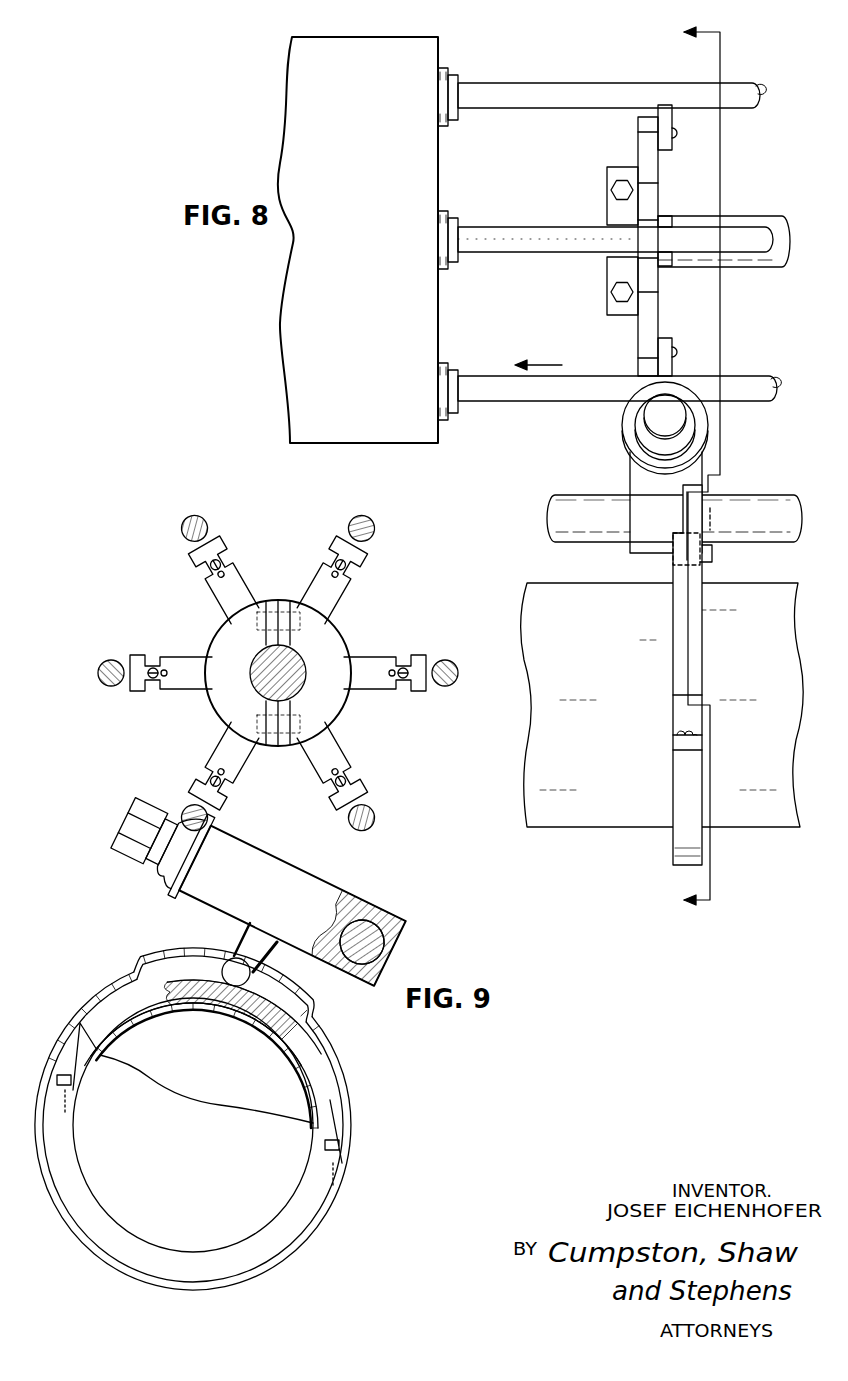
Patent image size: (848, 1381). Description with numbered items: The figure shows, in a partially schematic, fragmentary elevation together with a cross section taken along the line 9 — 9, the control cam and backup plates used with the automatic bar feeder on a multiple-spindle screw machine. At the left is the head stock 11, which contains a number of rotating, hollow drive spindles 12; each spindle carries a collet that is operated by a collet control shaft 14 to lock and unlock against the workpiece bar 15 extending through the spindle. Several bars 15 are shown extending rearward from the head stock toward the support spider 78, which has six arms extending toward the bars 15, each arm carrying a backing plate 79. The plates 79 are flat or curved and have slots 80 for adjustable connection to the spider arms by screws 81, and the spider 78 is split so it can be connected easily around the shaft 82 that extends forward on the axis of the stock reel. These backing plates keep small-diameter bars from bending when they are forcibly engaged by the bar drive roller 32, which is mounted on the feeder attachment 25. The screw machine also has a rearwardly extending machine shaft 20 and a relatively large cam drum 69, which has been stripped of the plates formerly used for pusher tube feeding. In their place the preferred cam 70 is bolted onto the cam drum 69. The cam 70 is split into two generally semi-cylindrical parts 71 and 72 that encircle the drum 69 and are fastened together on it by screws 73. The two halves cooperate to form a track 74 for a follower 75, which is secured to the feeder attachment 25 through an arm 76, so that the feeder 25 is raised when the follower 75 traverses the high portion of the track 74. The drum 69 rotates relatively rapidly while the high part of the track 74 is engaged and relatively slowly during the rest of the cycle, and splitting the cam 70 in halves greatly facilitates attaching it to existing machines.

In FIG. 8, the section line 9 — 9 is at (685, 467).
In FIG. 8, the head stock 11 is at (435, 65).
In FIG. 8, the drive spindle 12 is at (449, 220).
In FIG. 8, the collet control shaft 14 is at (465, 234).
In FIG. 8, the workpiece bar 15 is at (752, 90).
In FIG. 9, the workpiece bar 15 is at (200, 518).
In FIG. 8, the machine shaft 20 is at (774, 498).
In FIG. 9, the machine shaft 20 is at (380, 925).
In FIG. 8, the automatic feeder attachment 25 is at (630, 473).
In FIG. 9, the automatic feeder attachment 25 is at (348, 890).
In FIG. 8, the bar drive roller 32 is at (622, 427).
In FIG. 9, the bar drive roller 32 is at (148, 872).
In FIG. 8, the cam drum 69 is at (580, 816).
In FIG. 9, the cam drum 69 is at (232, 1012).
In FIG. 8, the cam 70 is at (690, 843).
In FIG. 9, the cam 70 is at (340, 1070).
In FIG. 9, the cam part 71 is at (160, 1255).
In FIG. 9, the cam part 72 is at (160, 1012).
In FIG. 8, the screws 73 is at (680, 731).
In FIG. 9, the screws 73 is at (60, 1066).
In FIG. 9, the track 74 is at (116, 1000).
In FIG. 8, the follower 75 is at (708, 570).
In FIG. 9, the follower 75 is at (262, 962).
In FIG. 8, the arm 76 is at (714, 551).
In FIG. 9, the arm 76 is at (244, 938).
In FIG. 8, the support spider 78 is at (652, 308).
In FIG. 9, the support spider 78 is at (336, 706).
In FIG. 8, the backing plate 79 is at (674, 112).
In FIG. 9, the backing plate 79 is at (218, 548).
In FIG. 9, the slot 80 is at (224, 562).
In FIG. 8, the screws 81 is at (676, 136).
In FIG. 9, the screws 81 is at (208, 578).
In FIG. 8, the shaft 82 is at (780, 264).
In FIG. 9, the shaft 82 is at (300, 668).